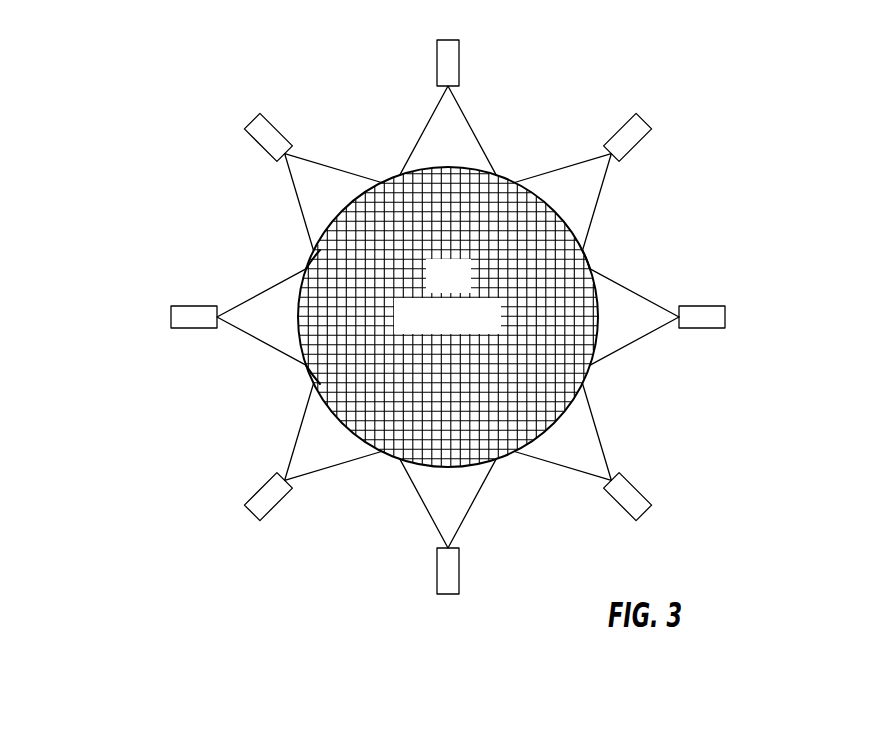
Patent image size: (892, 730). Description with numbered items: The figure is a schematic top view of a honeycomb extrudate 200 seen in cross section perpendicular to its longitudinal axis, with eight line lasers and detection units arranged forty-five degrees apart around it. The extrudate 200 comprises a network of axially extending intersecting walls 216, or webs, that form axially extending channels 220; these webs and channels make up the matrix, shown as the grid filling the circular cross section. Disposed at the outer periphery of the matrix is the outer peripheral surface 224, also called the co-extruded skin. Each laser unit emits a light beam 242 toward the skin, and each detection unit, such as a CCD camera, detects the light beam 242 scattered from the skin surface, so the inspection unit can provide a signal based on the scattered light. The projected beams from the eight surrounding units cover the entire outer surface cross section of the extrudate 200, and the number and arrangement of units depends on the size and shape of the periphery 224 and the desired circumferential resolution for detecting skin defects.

The wet extrudate 200 is at (469, 292).
The axially extending intersecting walls 216 is at (316, 283).
The axially extending channels 220 is at (325, 374).
The outer peripheral surface 224 is at (588, 262).
The light beam 242 is at (621, 347).